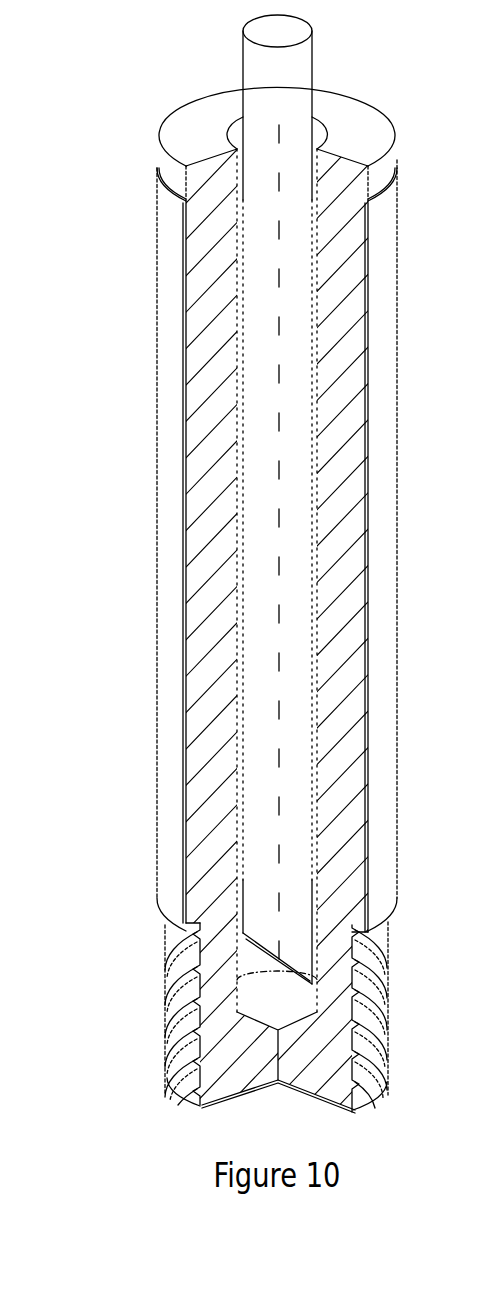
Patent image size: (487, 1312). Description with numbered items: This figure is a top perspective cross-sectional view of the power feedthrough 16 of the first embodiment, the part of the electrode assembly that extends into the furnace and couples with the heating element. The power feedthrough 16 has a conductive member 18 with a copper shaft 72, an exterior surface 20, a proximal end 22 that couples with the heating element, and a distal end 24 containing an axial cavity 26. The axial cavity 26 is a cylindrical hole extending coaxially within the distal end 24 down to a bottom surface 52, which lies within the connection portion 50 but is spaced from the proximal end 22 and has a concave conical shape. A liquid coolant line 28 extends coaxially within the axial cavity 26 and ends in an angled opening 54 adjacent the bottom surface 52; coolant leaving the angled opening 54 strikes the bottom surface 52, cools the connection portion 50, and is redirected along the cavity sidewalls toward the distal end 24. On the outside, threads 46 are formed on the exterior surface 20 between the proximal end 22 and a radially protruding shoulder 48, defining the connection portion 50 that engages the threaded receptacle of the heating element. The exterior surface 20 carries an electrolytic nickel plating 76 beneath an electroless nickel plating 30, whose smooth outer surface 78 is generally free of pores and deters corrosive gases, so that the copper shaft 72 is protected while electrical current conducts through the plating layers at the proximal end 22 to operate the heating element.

The power feedthrough 16 is at (131, 97).
The conductive member 18 is at (170, 285).
The exterior surface 20 is at (170, 378).
The proximal end 22 is at (218, 1110).
The distal end 24 is at (358, 128).
The axial cavity 26 is at (240, 130).
The liquid coolant line 28 is at (260, 65).
The electroless nickel plating 30 is at (373, 168).
The threads 46 is at (170, 1005).
The radially protruding shoulder 48 is at (393, 930).
The connection portion 50 is at (143, 968).
The bottom surface 52 is at (267, 1018).
The angled opening 54 is at (270, 955).
The copper shaft 72 is at (200, 597).
The electrolytic nickel plating 76 is at (187, 672).
The outer surface 78 is at (166, 727).